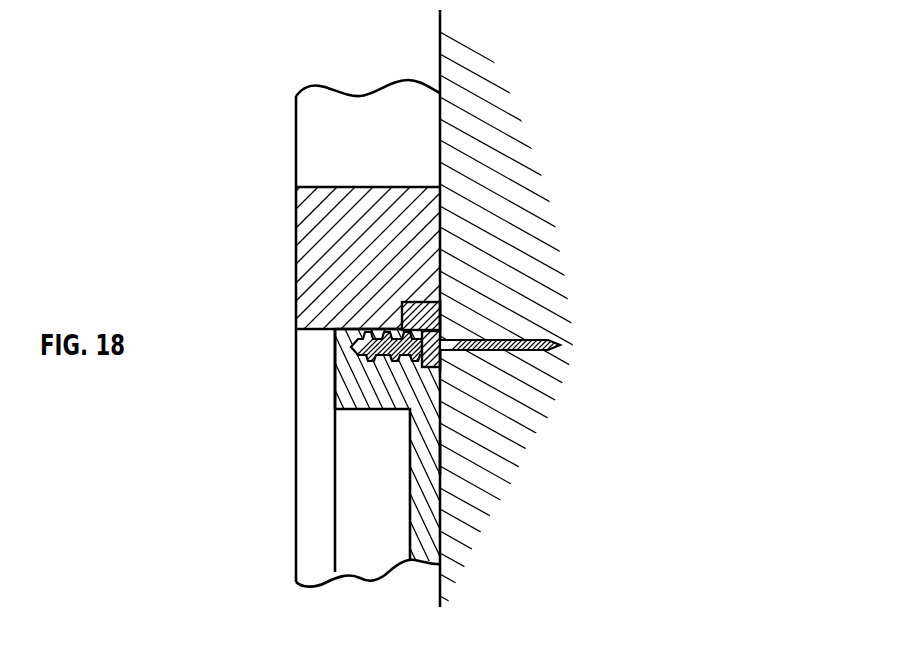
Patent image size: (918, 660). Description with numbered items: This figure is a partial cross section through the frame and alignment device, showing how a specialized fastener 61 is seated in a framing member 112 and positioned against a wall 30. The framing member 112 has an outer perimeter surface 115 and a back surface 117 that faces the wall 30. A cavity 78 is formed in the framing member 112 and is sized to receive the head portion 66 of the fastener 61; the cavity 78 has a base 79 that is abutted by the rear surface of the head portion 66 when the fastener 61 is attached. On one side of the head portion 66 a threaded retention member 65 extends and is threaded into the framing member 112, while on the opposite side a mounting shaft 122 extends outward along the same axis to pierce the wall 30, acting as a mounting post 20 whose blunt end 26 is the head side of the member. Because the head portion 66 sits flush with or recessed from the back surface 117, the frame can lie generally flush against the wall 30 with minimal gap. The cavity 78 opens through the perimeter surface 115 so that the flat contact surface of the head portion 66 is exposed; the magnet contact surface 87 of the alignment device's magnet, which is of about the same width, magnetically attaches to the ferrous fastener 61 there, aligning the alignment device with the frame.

The wall 30 is at (480, 160).
The mounting post 20 is at (297, 287).
The perimeter surface 115 is at (370, 329).
The magnet contact surface 87 is at (424, 326).
The blunt end 26 is at (442, 302).
The cavity 78 is at (442, 337).
The specialized fastener 61 is at (441, 397).
The mounting shaft 122 is at (515, 350).
The head portion 66 is at (440, 357).
The back surface 117 is at (440, 457).
The framing member 112 is at (335, 352).
The threaded retention member 65 is at (380, 350).
The base 79 is at (423, 352).